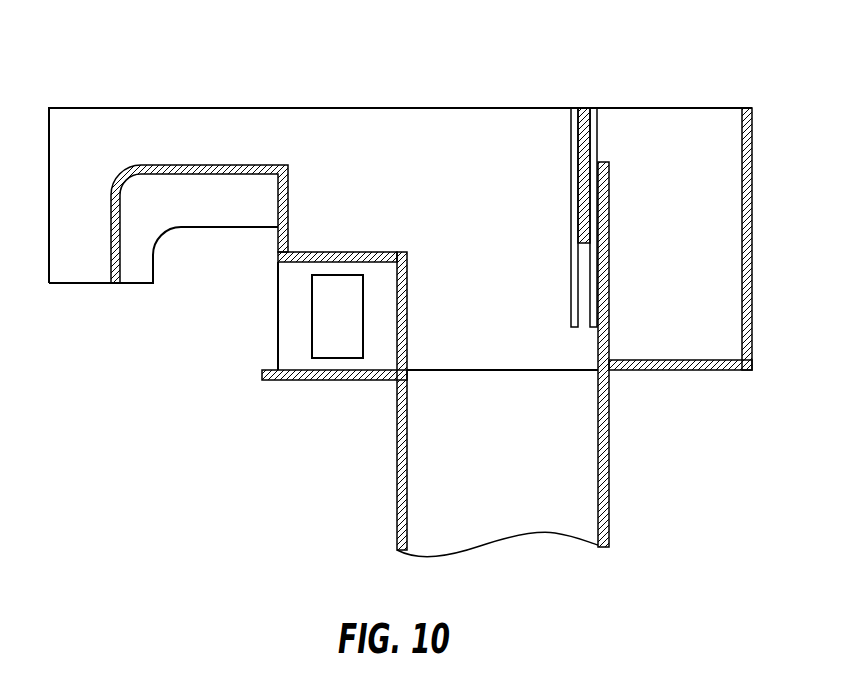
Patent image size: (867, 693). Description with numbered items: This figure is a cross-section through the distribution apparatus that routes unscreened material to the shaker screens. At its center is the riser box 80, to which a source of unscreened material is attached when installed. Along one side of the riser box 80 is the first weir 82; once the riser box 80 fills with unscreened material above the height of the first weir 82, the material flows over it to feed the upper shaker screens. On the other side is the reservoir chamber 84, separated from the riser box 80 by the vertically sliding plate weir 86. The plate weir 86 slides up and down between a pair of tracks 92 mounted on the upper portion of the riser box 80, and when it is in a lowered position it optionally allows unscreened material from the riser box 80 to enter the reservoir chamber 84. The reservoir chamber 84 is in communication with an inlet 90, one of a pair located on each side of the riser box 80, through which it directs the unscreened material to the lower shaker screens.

The riser box 80 is at (610, 450).
The first weir 82 is at (190, 164).
The reservoir chamber 84 is at (673, 120).
The vertically sliding plate weir 86 is at (587, 107).
The inlet 90 is at (318, 307).
The tracks 92 is at (592, 295).